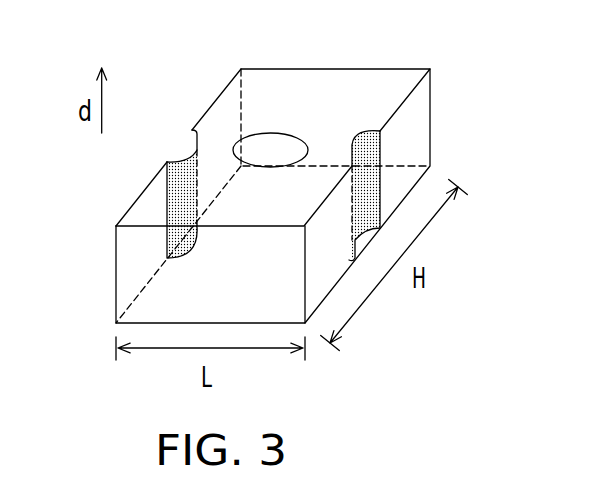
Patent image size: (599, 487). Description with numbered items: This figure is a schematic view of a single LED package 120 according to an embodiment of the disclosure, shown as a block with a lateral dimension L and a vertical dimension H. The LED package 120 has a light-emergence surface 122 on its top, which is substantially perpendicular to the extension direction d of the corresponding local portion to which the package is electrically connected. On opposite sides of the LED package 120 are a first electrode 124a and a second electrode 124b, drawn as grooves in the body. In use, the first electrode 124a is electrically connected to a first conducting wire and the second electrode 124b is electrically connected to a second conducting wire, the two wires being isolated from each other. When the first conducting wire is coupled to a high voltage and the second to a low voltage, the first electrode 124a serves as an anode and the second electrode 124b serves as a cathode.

The LED package 120 is at (133, 268).
The light-emergence surface 122 is at (312, 92).
The first electrode 124a is at (177, 162).
The second electrode 124b is at (363, 132).